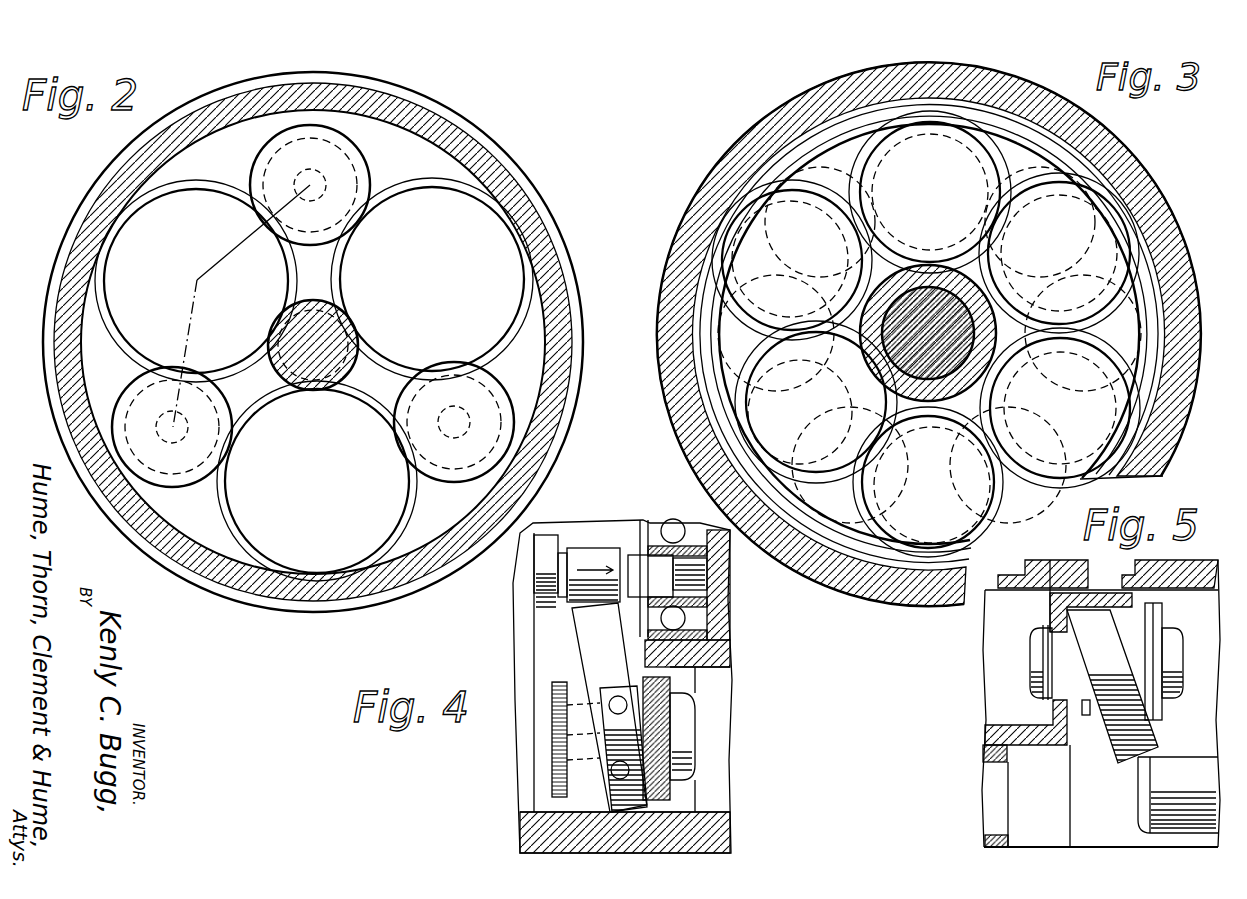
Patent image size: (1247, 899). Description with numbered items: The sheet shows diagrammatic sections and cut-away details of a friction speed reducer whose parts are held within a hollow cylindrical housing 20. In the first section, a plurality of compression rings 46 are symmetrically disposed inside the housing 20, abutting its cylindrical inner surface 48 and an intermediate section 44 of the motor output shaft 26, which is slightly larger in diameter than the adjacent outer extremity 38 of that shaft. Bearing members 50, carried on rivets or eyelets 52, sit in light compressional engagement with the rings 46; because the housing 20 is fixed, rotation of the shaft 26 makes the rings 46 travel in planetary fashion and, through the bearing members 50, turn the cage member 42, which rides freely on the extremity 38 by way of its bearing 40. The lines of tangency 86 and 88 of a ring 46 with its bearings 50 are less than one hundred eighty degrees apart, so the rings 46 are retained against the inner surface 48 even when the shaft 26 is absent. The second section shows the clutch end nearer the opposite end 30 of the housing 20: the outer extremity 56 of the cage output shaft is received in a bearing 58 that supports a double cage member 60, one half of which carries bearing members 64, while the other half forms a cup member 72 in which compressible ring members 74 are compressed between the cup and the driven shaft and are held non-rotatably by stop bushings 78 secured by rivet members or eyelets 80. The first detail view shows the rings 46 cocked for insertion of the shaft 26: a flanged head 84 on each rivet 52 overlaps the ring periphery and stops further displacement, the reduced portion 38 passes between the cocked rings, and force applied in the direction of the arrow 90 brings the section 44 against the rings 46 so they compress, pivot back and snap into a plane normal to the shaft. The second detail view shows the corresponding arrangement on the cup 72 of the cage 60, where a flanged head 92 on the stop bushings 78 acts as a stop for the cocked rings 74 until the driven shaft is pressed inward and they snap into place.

In FIG. 2, the housing 20 is at (432, 104).
In FIG. 3, the housing 20 is at (1136, 154).
In FIG. 4, the housing 20 is at (550, 828).
In FIG. 5, the housing 20 is at (1176, 560).
In FIG. 2, the output shaft 26 is at (343, 316).
In FIG. 4, the output shaft 26 is at (547, 535).
In FIG. 3, the opposite end 30 is at (990, 280).
In FIG. 5, the opposite end 30 is at (1206, 787).
In FIG. 4, the outer extremity 38 is at (660, 572).
In FIG. 4, the bearing 40 is at (705, 652).
In FIG. 4, the cage member 42 is at (673, 787).
In FIG. 2, the intermediate section 44 is at (364, 345).
In FIG. 4, the intermediate section 44 is at (605, 547).
In FIG. 2, the compression rings 46 is at (210, 180).
In FIG. 4, the compression rings 46 is at (597, 652).
In FIG. 2, the cylindrical inner surface 48 is at (251, 127).
In FIG. 3, the cylindrical inner surface 48 is at (817, 127).
In FIG. 4, the cylindrical inner surface 48 is at (707, 812).
In FIG. 2, the bearing members 50 is at (328, 140).
In FIG. 4, the bearing members 50 is at (665, 684).
In FIG. 4, the rivets or eyelets 52 is at (695, 715).
In FIG. 3, the outer extremity 56 is at (867, 288).
In FIG. 5, the bearing 58 is at (984, 736).
In FIG. 5, the double cage member 60 is at (1002, 725).
In FIG. 3, the bearing members 64 is at (882, 135).
In FIG. 3, the cup member 72 is at (1004, 88).
In FIG. 5, the cup member 72 is at (1132, 578).
In FIG. 3, the compressible ring members 74 is at (1080, 130).
In FIG. 5, the compressible ring members 74 is at (1158, 732).
In FIG. 3, the stop bushings 78 is at (720, 286).
In FIG. 5, the stop bushings 78 is at (1087, 713).
In FIG. 5, the rivet members or eyelets 80 is at (1178, 655).
In FIG. 2, the flanged head 84 is at (367, 160).
In FIG. 4, the flanged head 84 is at (553, 770).
In FIG. 2, the line of tangency 86 is at (186, 325).
In FIG. 2, the line of tangency 88 is at (247, 238).
In FIG. 4, the arrow 90 is at (588, 568).
In FIG. 3, the flanged head 92 is at (791, 185).
In FIG. 5, the flanged head 92 is at (1157, 601).